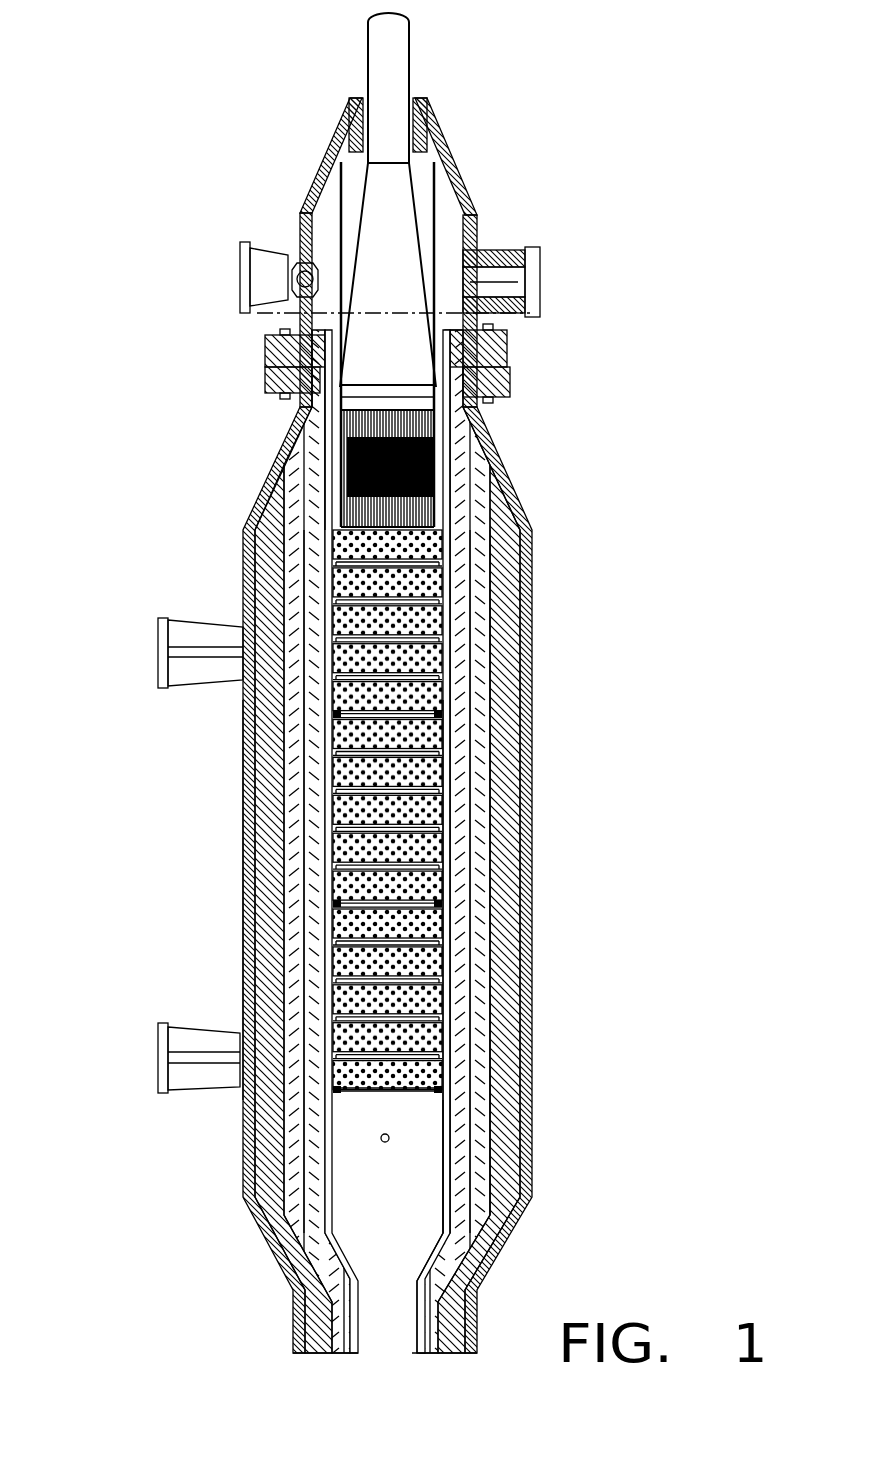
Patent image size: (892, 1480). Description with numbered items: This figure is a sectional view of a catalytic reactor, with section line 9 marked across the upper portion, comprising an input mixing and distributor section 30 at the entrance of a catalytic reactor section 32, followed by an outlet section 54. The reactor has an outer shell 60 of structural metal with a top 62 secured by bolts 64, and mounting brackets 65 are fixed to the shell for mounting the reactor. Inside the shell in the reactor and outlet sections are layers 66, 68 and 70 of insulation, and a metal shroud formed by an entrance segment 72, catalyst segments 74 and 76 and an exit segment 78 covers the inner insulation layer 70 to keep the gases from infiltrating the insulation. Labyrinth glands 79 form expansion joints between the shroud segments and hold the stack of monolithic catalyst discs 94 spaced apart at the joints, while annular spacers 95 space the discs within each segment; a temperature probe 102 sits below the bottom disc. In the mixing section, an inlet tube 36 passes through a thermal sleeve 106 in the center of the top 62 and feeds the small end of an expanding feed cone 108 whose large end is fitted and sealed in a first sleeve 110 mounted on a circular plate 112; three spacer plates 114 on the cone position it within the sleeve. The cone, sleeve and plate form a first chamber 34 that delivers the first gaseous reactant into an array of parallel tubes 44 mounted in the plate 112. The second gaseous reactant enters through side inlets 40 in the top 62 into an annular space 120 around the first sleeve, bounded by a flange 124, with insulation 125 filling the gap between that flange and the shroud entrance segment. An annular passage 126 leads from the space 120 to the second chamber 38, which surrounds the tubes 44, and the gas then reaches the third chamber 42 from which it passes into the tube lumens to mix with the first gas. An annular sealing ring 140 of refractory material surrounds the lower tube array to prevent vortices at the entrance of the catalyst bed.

The input mixing and distributor section 30 is at (156, 288).
The catalytic reactor section 32 is at (128, 768).
The first chamber 34 is at (393, 240).
The inlet tube 36 is at (402, 57).
The second chamber 38 is at (320, 418).
The inlets 40 is at (270, 250).
The third chamber 42 is at (330, 457).
The parallel tubes 44 is at (440, 458).
The outlet section 54 is at (145, 1290).
The outer shell 60 is at (243, 830).
The top 62 is at (430, 160).
The bolts 64 is at (262, 335).
The mounting brackets 65 is at (190, 625).
The insulation layer 66 is at (270, 872).
The insulation layer 68 is at (295, 912).
The inner insulation layer 70 is at (306, 955).
The entrance segment 72 is at (470, 525).
The catalyst segment 74 is at (495, 800).
The catalyst segment 76 is at (452, 1038).
The exit segment 78 is at (450, 1172).
The labyrinth glands 79 is at (440, 730).
The monolithic catalyst discs 94 is at (410, 660).
The annular spacers 95 is at (470, 858).
The temperature probe 102 is at (386, 1142).
The thermal sleeve 106 is at (420, 113).
The expanding feed cone 108 is at (347, 147).
The first sleeve 110 is at (317, 230).
The circular plate 112 is at (378, 400).
The spacer plates 114 is at (440, 230).
The annular space 120 is at (330, 190).
The flange 124 is at (490, 325).
The insulation 125 is at (493, 365).
The annular passage 126 is at (290, 323).
The annular sealing ring 140 is at (487, 497).
The section line 9 is at (227, 310).